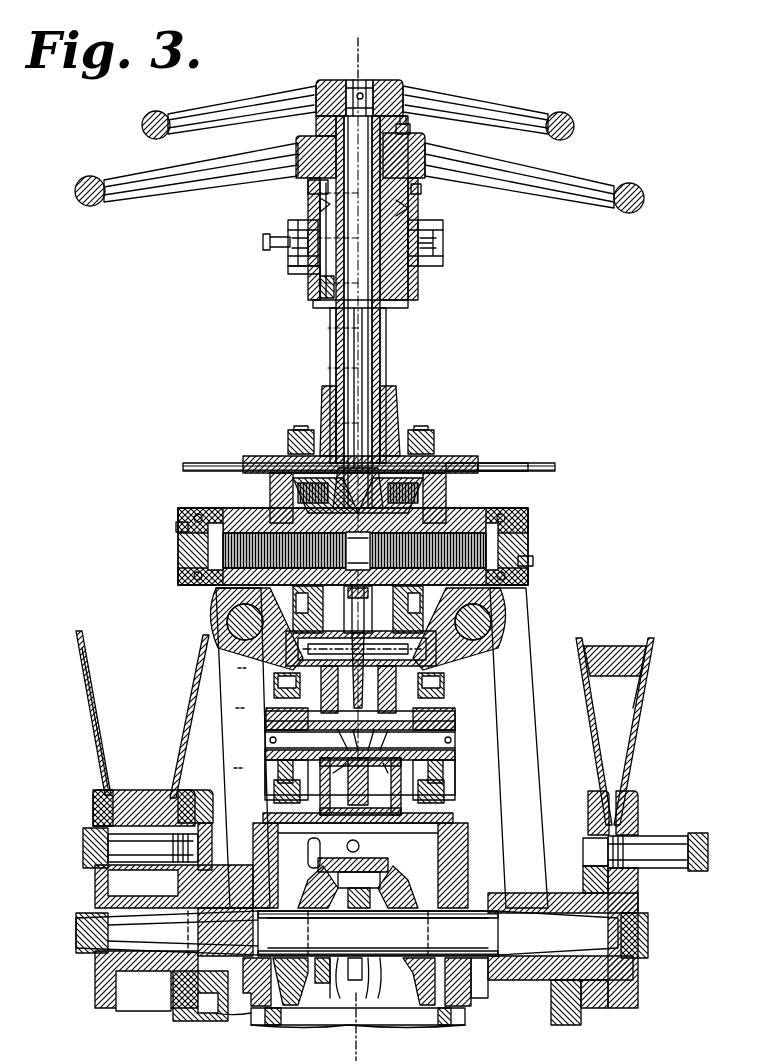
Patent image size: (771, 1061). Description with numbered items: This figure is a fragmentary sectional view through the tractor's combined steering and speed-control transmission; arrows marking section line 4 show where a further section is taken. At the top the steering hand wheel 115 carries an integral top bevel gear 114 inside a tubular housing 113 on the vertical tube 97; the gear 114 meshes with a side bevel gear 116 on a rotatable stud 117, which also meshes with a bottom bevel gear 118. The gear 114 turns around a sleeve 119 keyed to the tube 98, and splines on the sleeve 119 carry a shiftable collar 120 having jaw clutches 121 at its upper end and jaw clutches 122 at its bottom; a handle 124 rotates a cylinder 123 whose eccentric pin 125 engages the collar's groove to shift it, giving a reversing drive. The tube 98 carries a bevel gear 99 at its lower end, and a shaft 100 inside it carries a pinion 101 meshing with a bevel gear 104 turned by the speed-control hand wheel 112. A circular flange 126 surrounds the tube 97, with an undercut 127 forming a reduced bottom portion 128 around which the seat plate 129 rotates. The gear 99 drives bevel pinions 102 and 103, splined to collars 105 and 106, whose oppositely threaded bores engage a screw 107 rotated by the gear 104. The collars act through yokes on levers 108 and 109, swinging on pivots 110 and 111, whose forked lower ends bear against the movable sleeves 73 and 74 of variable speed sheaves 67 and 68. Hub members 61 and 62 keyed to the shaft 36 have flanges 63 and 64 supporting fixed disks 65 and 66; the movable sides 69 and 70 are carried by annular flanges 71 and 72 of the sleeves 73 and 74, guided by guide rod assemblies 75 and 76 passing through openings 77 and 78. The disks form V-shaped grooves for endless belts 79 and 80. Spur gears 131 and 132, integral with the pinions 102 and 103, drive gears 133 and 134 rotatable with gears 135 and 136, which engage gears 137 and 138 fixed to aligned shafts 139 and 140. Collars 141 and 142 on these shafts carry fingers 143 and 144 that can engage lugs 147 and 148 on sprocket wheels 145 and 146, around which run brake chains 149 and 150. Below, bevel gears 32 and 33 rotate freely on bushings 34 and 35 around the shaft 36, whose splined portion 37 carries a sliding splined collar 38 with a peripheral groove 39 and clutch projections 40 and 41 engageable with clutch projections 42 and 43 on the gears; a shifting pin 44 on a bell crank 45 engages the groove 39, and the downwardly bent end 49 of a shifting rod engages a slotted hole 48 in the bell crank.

The section line 4- 4 is at (315, 40).
The hand wheel 112 is at (452, 90).
The hand wheel 115 is at (545, 168).
The sleeve 119 is at (418, 140).
The tubular housing 113 is at (300, 285).
The jaw clutches 121 is at (300, 180).
The top bevel gear 114 is at (300, 196).
The side bevel gear 116 is at (414, 181).
The shiftable collar 120 is at (412, 200).
The handle 124 is at (255, 234).
The cylinder 123 is at (290, 248).
The eccentric pin 125 is at (285, 266).
The jaw clutches 122 is at (300, 278).
The rotatable stud 117 is at (428, 218).
The circular flange 126 is at (428, 244).
The bottom bevel gear 118 is at (320, 300).
The tube 98 is at (378, 330).
The vertical tube 97 is at (380, 350).
The shaft 100 is at (360, 372).
The pinion 101 is at (380, 410).
The bottom portion 128 is at (276, 452).
The bevel gear 99 is at (430, 452).
The undercut 127 is at (475, 452).
The plate 129 is at (540, 452).
The screw 107 is at (440, 510).
The collar 105 is at (488, 500).
The collar 106 is at (200, 500).
The bevel gear 104 is at (388, 641).
The pivot 111 is at (215, 616).
The pivot 110 is at (500, 612).
The spur gear 131 is at (338, 600).
The spur gear 132 is at (352, 589).
The bevel pinion 103 is at (305, 609).
The bevel pinion 102 is at (406, 609).
The gear 135 is at (358, 641).
The gear 136 is at (351, 670).
The gear 133 is at (330, 680).
The gear 134 is at (370, 680).
The lug 147 is at (266, 672).
The lug 148 is at (436, 680).
The lever 109 is at (243, 748).
The lever 108 is at (508, 680).
The sprocket wheel 145 is at (256, 700).
The sprocket wheel 146 is at (447, 712).
The shaft 139 is at (360, 753).
The shaft 140 is at (370, 737).
The collar 141 is at (278, 752).
The collar 142 is at (431, 734).
The gear 137 is at (334, 780).
The gear 138 is at (360, 785).
The finger 143 is at (262, 765).
The finger 144 is at (447, 770).
The chain 149 is at (270, 790).
The chain 150 is at (445, 805).
The variable speed sheave 67 is at (70, 688).
The metal disk 65 is at (84, 720).
The movable side 69 is at (182, 700).
The endless belt 79 is at (134, 782).
The annular flange 71 is at (200, 770).
The flange 63 is at (85, 800).
The opening 77 is at (85, 862).
The guide rod assembly 75 is at (86, 878).
The endless belt 80 is at (608, 632).
The movable side 70 is at (580, 712).
The metal disk 66 is at (628, 732).
The variable speed sheave 68 is at (648, 694).
The annular flange 72 is at (580, 795).
The flange 64 is at (630, 805).
The guide rod assembly 76 is at (660, 828).
The opening 78 is at (630, 880).
The downwardly bent end 49 is at (300, 844).
The bell crank 45 is at (376, 850).
The slotted hole 48 is at (320, 868).
The clutch projections 42 is at (388, 860).
The clutch projections 43 is at (300, 965).
The clutch projections 41 is at (326, 965).
The splines 37 is at (352, 968).
The splined collar 38 is at (382, 990).
The peripheral groove 39 is at (366, 1000).
The clutch projections 40 is at (400, 1002).
The bevel gear 32 is at (440, 1000).
The bevel gear 33 is at (282, 1010).
The bushing 35 is at (290, 936).
The shaft 36 is at (164, 933).
The bushing 34 is at (412, 935).
The shifting pin 44 is at (378, 933).
The hub member 62 is at (520, 972).
The movable sleeve 74 is at (579, 999).
The hub member 61 is at (140, 975).
The movable sleeve 73 is at (200, 994).